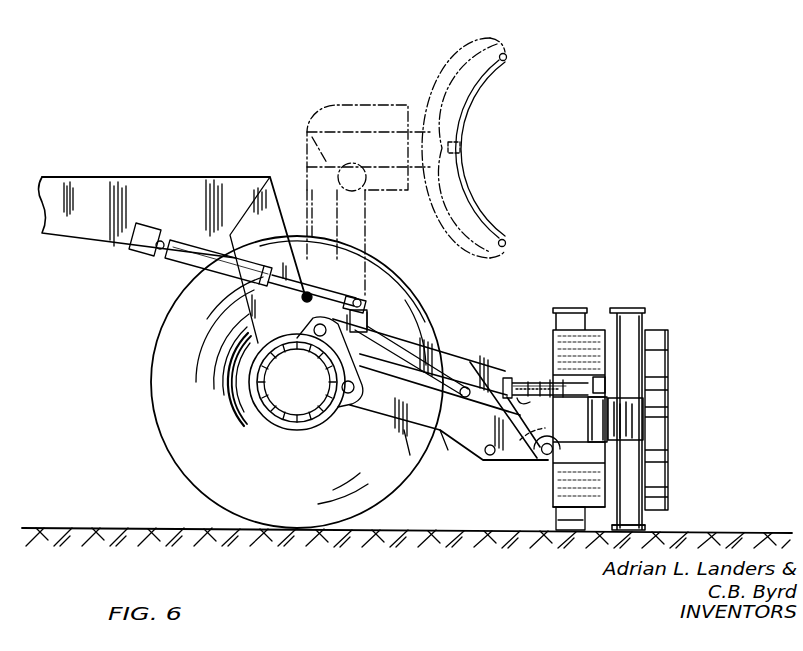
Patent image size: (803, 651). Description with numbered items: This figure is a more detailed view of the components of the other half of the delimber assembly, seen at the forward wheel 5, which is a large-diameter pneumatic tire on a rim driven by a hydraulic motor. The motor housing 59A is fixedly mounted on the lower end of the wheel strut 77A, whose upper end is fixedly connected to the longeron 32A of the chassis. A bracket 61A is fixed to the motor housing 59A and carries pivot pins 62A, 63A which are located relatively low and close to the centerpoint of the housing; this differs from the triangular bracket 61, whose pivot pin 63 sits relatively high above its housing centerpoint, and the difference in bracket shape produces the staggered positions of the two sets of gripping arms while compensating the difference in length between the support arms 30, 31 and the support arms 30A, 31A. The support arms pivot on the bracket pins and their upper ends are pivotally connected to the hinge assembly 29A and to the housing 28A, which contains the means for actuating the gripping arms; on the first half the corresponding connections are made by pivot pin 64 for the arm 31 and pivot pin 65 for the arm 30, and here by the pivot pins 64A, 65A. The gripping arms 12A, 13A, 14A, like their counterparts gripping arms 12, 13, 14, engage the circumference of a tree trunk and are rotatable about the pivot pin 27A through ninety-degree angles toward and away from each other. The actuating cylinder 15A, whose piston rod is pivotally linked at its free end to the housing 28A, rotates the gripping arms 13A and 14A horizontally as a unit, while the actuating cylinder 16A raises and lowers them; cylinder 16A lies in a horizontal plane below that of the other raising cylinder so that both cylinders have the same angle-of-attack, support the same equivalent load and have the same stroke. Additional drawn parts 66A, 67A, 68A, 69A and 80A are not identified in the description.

The forward wheel 5 is at (152, 437).
The gripping arm 12 is at (556, 501).
The gripping arm 12A is at (668, 373).
The gripping arm 13 is at (574, 309).
The gripping arm 13A is at (626, 311).
The gripping arm 14 is at (565, 544).
The gripping arm 14A is at (660, 523).
The actuating cylinder 15A is at (536, 382).
The actuating cylinder 16A is at (190, 272).
The pivot pin 27A is at (594, 380).
The housing 28A is at (632, 418).
The hinge assembly 29A is at (512, 470).
The support arm 30 is at (408, 322).
The support arm 30A is at (476, 362).
The support arm 31 is at (440, 440).
The support arm 31A is at (406, 445).
The longeron 32A is at (166, 164).
The motor housing 59A is at (246, 398).
The bracket 61 is at (292, 328).
The bracket 61A is at (362, 360).
The pivot pin 62A is at (370, 412).
The pivot pin 63 is at (300, 301).
The pivot pin 63A is at (320, 336).
The pivot pin 64 is at (487, 456).
The pivot pin 64A is at (548, 464).
The pivot pin 65 is at (482, 404).
The pivot pin 65A is at (522, 399).
The leg 66A is at (276, 270).
The pivot pin 67A is at (363, 298).
The link 68A is at (372, 300).
The link 69A is at (372, 312).
The wheel strut 77A is at (296, 178).
The connection 80A is at (528, 377).